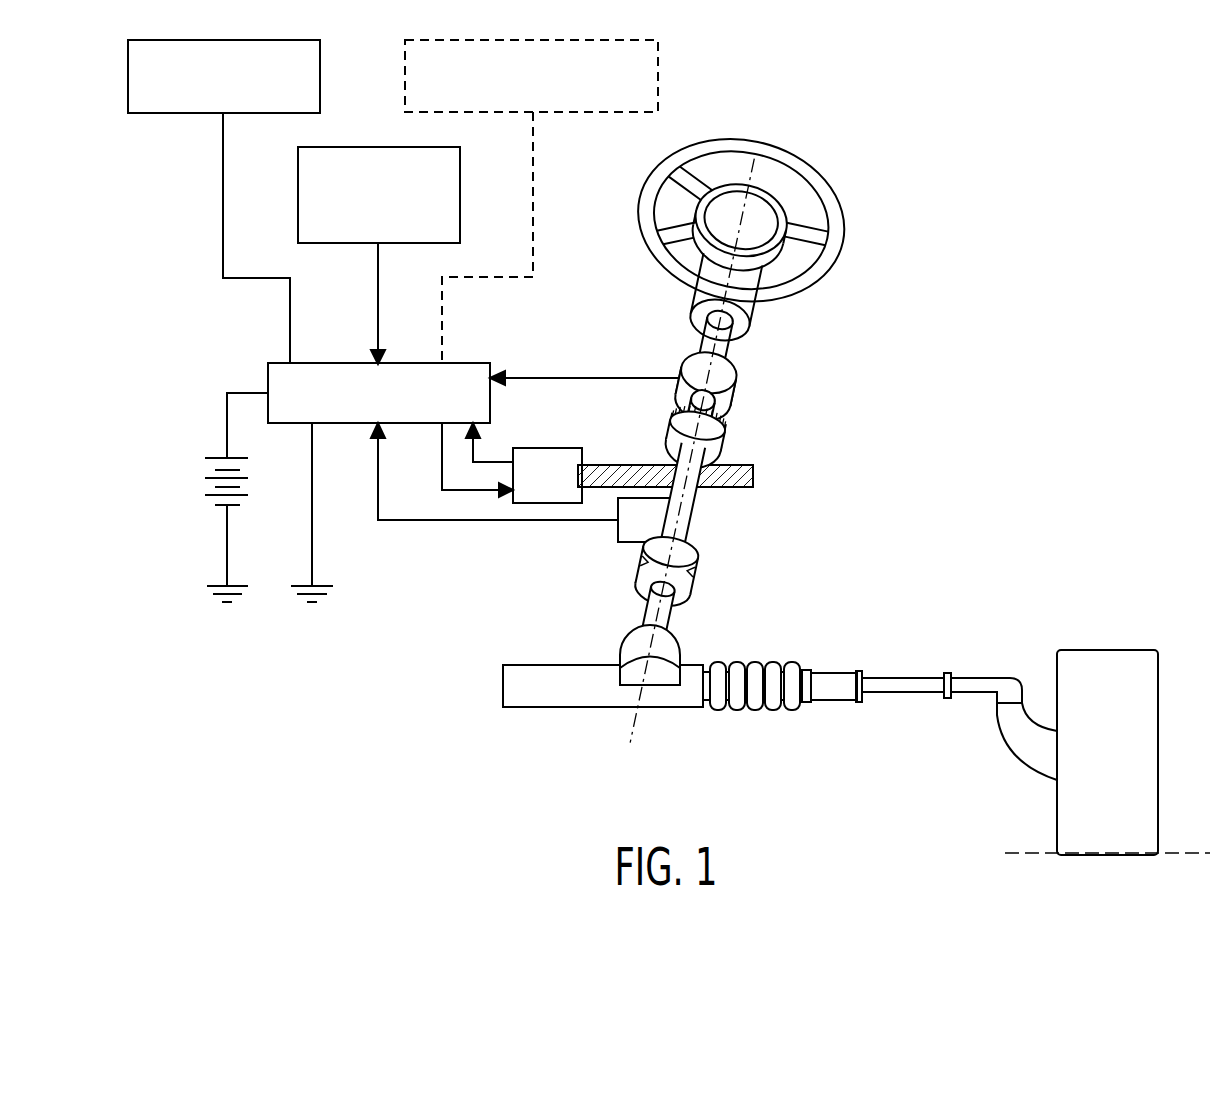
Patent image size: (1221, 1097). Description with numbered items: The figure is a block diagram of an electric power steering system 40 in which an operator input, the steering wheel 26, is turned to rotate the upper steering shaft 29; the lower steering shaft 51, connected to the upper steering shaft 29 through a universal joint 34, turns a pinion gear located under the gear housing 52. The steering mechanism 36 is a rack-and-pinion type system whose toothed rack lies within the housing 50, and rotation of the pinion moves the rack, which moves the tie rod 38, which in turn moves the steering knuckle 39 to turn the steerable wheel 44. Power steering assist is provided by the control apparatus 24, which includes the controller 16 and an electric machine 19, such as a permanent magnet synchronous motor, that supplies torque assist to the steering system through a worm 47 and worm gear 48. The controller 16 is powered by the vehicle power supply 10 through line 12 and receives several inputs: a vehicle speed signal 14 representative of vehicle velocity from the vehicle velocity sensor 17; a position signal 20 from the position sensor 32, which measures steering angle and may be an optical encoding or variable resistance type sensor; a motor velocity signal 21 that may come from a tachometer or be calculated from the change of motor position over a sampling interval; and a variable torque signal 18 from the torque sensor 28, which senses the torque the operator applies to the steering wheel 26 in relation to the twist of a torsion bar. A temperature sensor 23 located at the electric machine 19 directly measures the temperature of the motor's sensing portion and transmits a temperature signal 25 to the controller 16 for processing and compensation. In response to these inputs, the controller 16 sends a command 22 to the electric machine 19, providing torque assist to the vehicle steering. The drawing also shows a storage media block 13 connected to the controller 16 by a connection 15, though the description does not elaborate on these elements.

The vehicle power supply 10 is at (212, 485).
The line 12 is at (240, 392).
The storage media 13 is at (163, 113).
The vehicle speed signal 14 is at (378, 262).
The storage media connection line 15 is at (222, 180).
The controller 16 is at (345, 362).
The vehicle velocity sensor 17 is at (378, 147).
The variable torque signal 18 is at (596, 378).
The electric machine 19 is at (557, 448).
The position signal 20 is at (497, 521).
The motor velocity signal 21 is at (500, 462).
The command 22 is at (455, 520).
The temperature sensor 23 is at (660, 92).
The control apparatus 24 is at (928, 368).
The temperature signal 25 is at (535, 175).
The steering wheel 26 is at (795, 165).
The torque sensor 28 is at (730, 380).
The upper steering shaft 29 is at (705, 342).
The position sensor 32 is at (618, 532).
The universal joint 34 is at (697, 572).
The steering mechanism 36 is at (775, 655).
The tie rod 38 is at (897, 692).
The steering knuckle 39 is at (1022, 738).
The electric power steering system 40 is at (1012, 470).
The steerable wheel 44 is at (1093, 665).
The worm 47 is at (753, 476).
The worm gear 48 is at (708, 438).
The housing 50 is at (543, 695).
The lower steering shaft 51 is at (667, 622).
The gear housing 52 is at (628, 646).